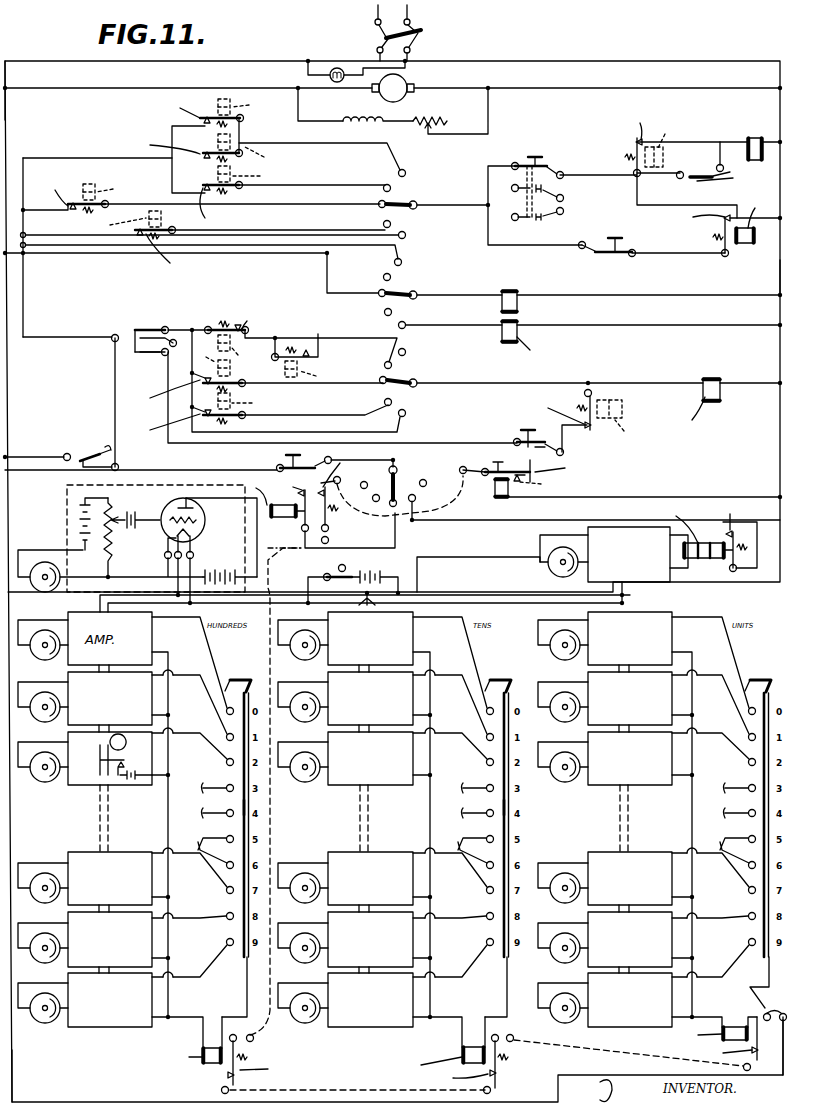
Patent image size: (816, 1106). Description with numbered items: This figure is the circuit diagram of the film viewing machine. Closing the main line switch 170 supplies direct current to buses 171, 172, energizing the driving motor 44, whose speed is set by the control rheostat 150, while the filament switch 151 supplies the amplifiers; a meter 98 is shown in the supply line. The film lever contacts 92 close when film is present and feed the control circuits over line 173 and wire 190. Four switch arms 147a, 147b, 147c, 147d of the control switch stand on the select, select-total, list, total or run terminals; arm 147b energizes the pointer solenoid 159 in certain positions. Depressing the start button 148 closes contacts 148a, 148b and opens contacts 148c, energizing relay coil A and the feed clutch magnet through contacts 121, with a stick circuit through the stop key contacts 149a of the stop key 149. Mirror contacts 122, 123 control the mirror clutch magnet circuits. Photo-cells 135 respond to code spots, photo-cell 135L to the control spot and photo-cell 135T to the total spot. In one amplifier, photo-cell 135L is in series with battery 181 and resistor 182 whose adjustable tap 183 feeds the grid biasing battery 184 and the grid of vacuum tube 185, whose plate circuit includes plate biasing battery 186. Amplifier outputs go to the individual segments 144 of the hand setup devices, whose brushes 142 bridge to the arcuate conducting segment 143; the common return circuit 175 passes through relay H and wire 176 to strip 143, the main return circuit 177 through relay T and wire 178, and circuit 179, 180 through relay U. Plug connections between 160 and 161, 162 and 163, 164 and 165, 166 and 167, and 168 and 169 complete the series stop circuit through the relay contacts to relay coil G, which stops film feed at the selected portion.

The driving motor 44 is at (401, 84).
The film lever contacts 92 is at (82, 455).
The meter 98 is at (337, 67).
The contacts 121 is at (710, 174).
The mirror contacts 122 is at (152, 330).
The mirror contact 123 is at (135, 353).
The photo-cells 135 is at (43, 632).
The photo-cell 135L is at (45, 562).
The photo-cell 135T is at (548, 566).
The brushes 142 is at (247, 681).
The arcuate conducting segment 143 is at (249, 808).
The individual segments 144 is at (225, 707).
The switch arm 147a is at (416, 201).
The switch arm 147b is at (419, 292).
The switch arm 147c is at (419, 380).
The switch arm 147d is at (401, 478).
The start button 148 is at (542, 188).
The start button contacts 148a is at (549, 171).
The start button contacts 148b is at (562, 196).
The start button contacts 148c is at (563, 213).
The stop key 149 is at (622, 240).
The stop key contacts 149a is at (593, 250).
The control rheostat 150 is at (440, 126).
The filament switch 151 is at (338, 568).
The solenoid 159 is at (518, 296).
The plug connection terminal 160 is at (785, 1014).
The plug connection terminal 161 is at (768, 980).
The plug connection terminal 162 is at (751, 1067).
The plug connection terminal 163 is at (514, 1043).
The plug connection terminal 164 is at (491, 1090).
The plug connection terminal 165 is at (221, 1090).
The plug connection terminal 166 is at (280, 1043).
The plug connection terminal 167 is at (330, 540).
The plug connection terminal 168 is at (391, 464).
The plug connection terminal 169 is at (460, 485).
The main line switch 170 is at (418, 22).
The bus 171 is at (6, 113).
The bus 172 is at (780, 277).
The line 173 is at (75, 337).
The common return circuit 175 is at (192, 1019).
The wire 176 is at (247, 992).
The main return circuit 177 is at (443, 1019).
The wire 178 is at (507, 977).
The circuit 179 is at (703, 1018).
The circuit 180 is at (747, 1005).
The battery 181 is at (78, 508).
The resistor 182 is at (112, 555).
The adjustable tap 183 is at (116, 516).
The grid biasing battery 184 is at (136, 510).
The vacuum tube 185 is at (205, 522).
The plate biasing battery 186 is at (220, 563).
The wire 190 is at (13, 1067).